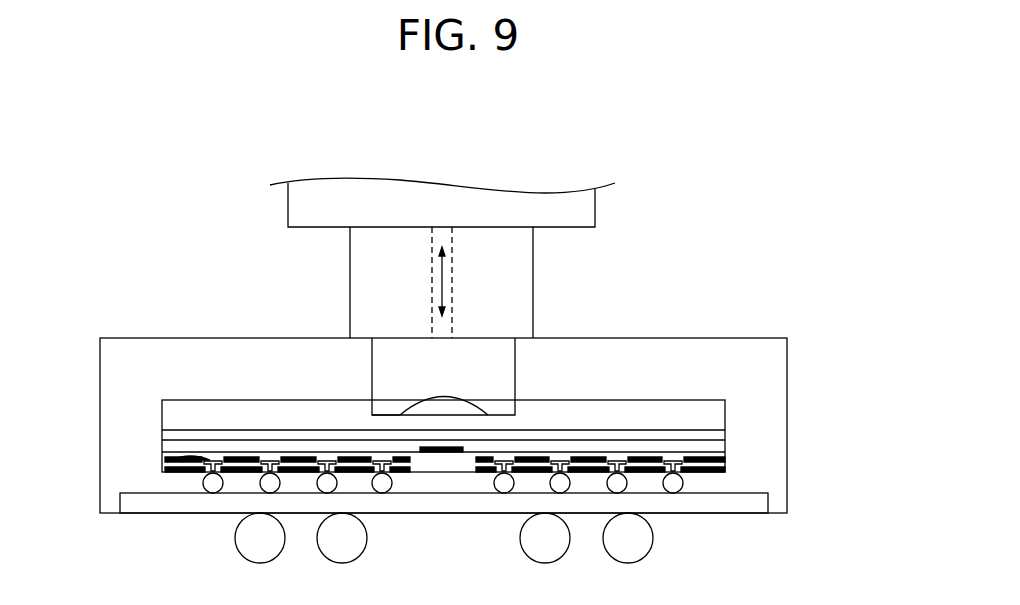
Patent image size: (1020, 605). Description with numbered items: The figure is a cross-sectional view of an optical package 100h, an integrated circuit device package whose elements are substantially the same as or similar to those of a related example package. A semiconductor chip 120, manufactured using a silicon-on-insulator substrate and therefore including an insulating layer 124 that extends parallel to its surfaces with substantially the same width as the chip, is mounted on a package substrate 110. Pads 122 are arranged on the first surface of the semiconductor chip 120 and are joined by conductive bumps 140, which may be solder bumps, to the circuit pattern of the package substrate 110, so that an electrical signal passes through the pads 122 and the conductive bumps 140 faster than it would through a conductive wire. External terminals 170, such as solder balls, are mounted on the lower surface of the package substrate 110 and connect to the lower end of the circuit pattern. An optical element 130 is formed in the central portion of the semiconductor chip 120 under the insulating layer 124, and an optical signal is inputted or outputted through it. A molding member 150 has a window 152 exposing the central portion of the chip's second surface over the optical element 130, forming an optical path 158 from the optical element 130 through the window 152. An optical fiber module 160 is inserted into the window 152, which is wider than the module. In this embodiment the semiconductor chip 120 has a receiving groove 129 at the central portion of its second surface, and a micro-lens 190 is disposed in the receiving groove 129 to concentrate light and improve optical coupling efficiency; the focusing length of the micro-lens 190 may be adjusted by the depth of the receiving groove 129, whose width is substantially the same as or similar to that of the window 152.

The optical package 100h is at (415, 126).
The package substrate 110 is at (760, 503).
The semiconductor chip 120 is at (717, 410).
The pads 122 is at (163, 458).
The insulating layer 124 is at (717, 437).
The receiving groove 129 is at (385, 410).
The optical element 130 is at (440, 452).
The conductive bumps 140 is at (677, 482).
The molding member 150 is at (772, 383).
The window 152 is at (395, 372).
The optical path 158 is at (433, 270).
The optical fiber module 160 is at (533, 277).
The external terminals 170 is at (637, 545).
The micro-lens 190 is at (467, 410).